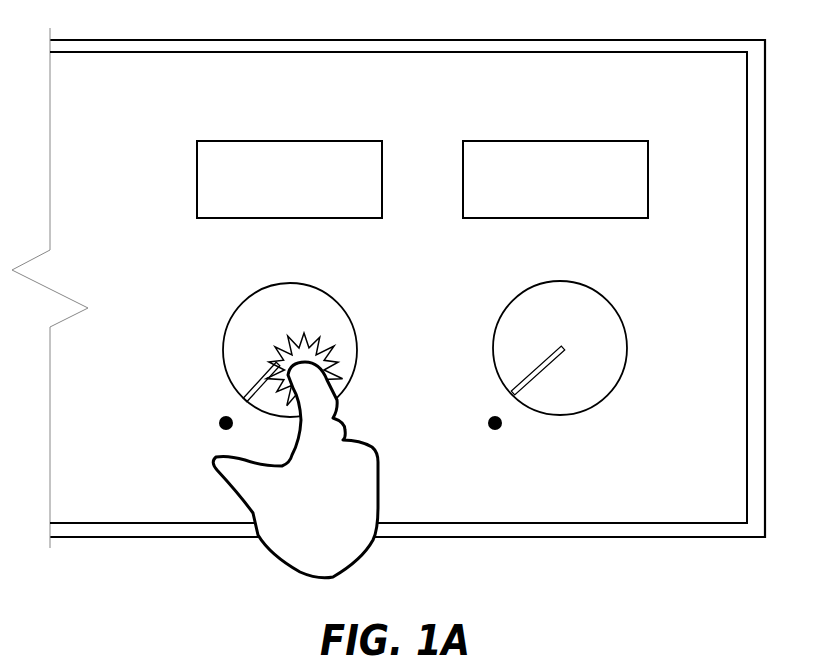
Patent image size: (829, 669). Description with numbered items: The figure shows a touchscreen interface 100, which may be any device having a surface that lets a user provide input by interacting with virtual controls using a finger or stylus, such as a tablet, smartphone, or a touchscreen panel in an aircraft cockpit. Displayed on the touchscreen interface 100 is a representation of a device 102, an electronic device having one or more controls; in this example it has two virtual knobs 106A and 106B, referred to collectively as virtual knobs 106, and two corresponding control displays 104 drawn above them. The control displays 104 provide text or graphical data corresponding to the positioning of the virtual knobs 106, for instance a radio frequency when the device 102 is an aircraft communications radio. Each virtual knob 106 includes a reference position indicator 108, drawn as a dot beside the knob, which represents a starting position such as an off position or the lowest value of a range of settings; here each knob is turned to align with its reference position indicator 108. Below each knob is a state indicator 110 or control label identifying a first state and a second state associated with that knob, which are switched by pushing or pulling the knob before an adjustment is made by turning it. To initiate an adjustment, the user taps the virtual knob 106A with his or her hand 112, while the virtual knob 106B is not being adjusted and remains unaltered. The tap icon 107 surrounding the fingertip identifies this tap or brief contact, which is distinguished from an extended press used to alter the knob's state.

The touchscreen interface 100 is at (605, 45).
The device 102 is at (375, 65).
The control displays 104 is at (505, 150).
The virtual knobs 106 is at (425, 347).
The virtual knob 106A is at (290, 350).
The virtual knob 106B is at (560, 348).
The tap icon 107 is at (330, 355).
The reference position indicator 108 is at (220, 422).
The state indicator 110 is at (212, 443).
The hand 112 is at (295, 470).